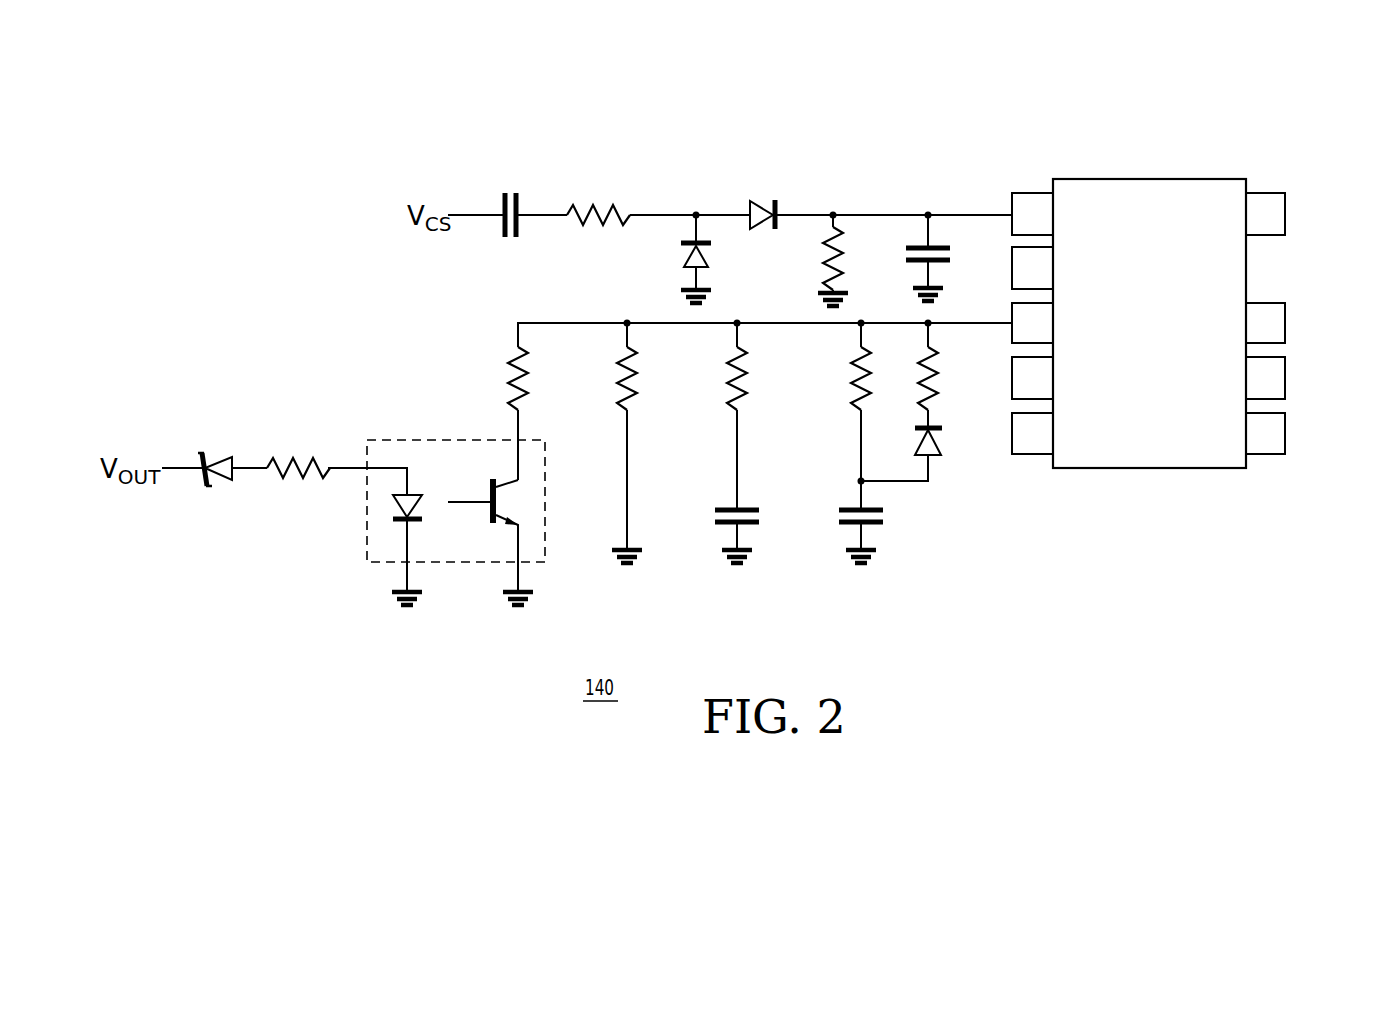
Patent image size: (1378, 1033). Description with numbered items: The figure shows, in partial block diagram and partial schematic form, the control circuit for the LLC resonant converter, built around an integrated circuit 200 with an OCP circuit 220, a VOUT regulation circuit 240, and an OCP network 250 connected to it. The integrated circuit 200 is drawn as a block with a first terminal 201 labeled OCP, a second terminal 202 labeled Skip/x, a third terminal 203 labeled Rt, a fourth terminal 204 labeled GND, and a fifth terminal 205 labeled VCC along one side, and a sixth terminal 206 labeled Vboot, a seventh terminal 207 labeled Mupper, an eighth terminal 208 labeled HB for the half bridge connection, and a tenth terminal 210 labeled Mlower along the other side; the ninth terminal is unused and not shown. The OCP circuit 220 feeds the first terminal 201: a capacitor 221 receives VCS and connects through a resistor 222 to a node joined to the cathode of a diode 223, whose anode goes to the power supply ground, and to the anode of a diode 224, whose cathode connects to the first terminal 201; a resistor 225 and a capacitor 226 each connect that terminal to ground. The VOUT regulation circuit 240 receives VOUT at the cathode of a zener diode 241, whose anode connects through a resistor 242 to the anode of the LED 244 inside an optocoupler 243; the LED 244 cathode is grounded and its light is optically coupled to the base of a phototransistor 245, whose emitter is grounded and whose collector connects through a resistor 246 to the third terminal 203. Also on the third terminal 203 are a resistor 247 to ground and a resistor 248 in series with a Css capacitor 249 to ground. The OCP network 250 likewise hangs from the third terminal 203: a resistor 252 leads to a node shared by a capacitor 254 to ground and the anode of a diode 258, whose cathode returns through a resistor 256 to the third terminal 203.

The integrated circuit 200 is at (1156, 179).
The first terminal 201 is at (1010, 200).
The second terminal 202 is at (1010, 276).
The third terminal 203 is at (1010, 338).
The fourth terminal 204 is at (1010, 381).
The fifth terminal 205 is at (1010, 437).
The sixth terminal 206 is at (1286, 434).
The seventh terminal 207 is at (1286, 377).
The eighth terminal 208 is at (1286, 324).
The tenth terminal 210 is at (1286, 215).
The OCP circuit 220 is at (468, 195).
The capacitor 221 is at (518, 192).
The resistor 222 is at (607, 207).
The diode 223 is at (683, 258).
The diode 224 is at (774, 203).
The resistor 225 is at (826, 255).
The capacitor 226 is at (910, 258).
The VOUT regulation circuit 240 is at (163, 446).
The zener diode 241 is at (232, 457).
The resistor 242 is at (290, 454).
The optocoupler 243 is at (412, 440).
The light emitting diode 244 is at (415, 494).
The phototransistor 245 is at (487, 519).
The resistor 246 is at (505, 372).
The resistor 247 is at (617, 388).
The resistor 248 is at (727, 388).
The Css capacitor 249 is at (722, 508).
The OCP network 250 is at (882, 585).
The resistor 252 is at (852, 388).
The capacitor 254 is at (848, 508).
The resistor 256 is at (920, 388).
The diode 258 is at (918, 442).